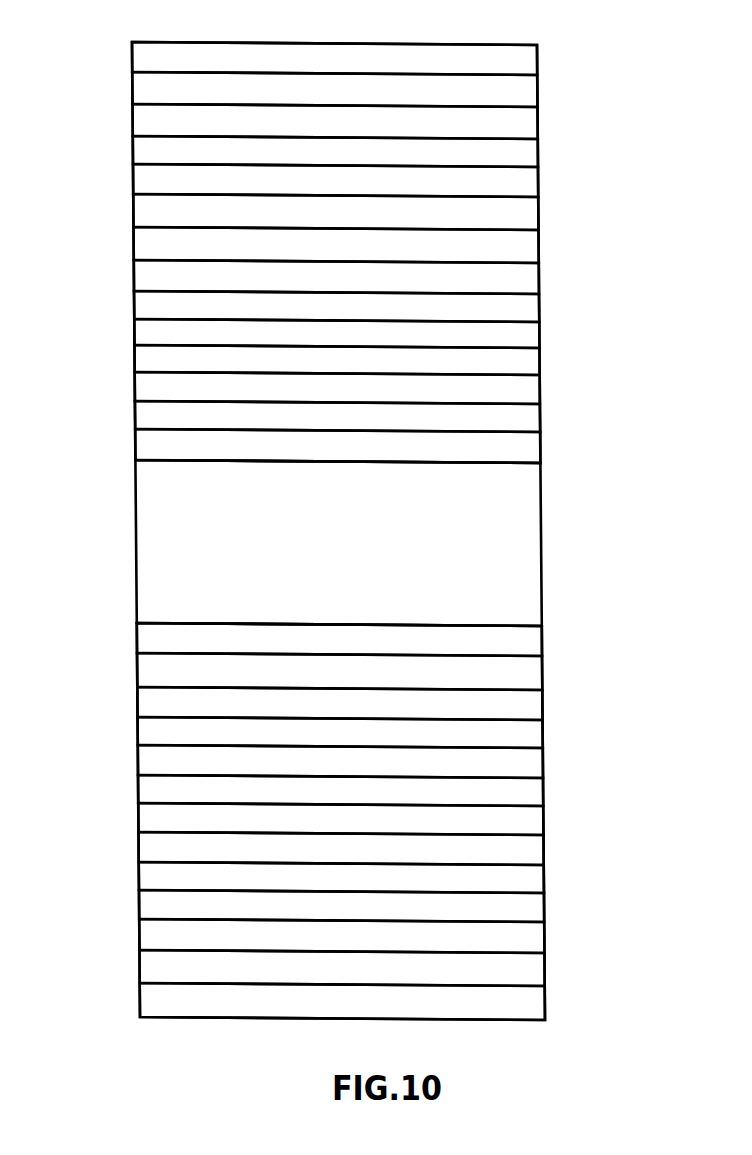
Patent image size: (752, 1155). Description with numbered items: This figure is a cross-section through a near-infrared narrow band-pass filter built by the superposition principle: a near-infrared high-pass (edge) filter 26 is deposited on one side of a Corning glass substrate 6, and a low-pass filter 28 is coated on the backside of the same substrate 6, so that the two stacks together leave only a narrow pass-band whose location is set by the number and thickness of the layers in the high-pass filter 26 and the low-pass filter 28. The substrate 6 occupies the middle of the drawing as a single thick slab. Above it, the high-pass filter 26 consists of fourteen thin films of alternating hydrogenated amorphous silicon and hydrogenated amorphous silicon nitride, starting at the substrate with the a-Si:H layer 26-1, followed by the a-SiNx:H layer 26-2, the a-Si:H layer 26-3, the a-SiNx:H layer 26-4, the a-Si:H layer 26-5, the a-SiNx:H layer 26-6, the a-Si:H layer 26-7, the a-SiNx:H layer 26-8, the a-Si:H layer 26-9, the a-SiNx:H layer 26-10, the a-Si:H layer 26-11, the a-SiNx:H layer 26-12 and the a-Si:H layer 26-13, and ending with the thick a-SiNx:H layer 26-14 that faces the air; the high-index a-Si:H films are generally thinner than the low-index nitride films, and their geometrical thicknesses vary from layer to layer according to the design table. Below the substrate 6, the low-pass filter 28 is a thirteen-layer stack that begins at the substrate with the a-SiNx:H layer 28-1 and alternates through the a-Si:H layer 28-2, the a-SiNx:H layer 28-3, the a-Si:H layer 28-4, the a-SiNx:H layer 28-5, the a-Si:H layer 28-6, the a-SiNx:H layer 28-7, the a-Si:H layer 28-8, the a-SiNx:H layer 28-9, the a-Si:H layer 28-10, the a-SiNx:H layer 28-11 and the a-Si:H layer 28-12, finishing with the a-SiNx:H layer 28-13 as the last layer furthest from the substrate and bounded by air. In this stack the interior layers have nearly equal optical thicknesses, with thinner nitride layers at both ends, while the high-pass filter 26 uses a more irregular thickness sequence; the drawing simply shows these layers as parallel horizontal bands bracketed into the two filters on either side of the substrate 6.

The glass substrate 6 is at (338, 543).
The near-infrared high-pass filter 26 is at (113, 486).
The low-pass filter 28 is at (113, 624).
The a-Si:H layer 26-1 is at (533, 446).
The a-SiNx:H layer 26-2 is at (533, 416).
The a-Si:H layer 26-3 is at (533, 388).
The a-SiNx:H layer 26-4 is at (533, 360).
The a-Si:H layer 26-5 is at (533, 333).
The a-SiNx:H layer 26-6 is at (533, 306).
The a-Si:H layer 26-7 is at (533, 276).
The a-SiNx:H layer 26-8 is at (533, 244).
The a-Si:H layer 26-9 is at (533, 212).
The a-SiNx:H layer 26-10 is at (533, 180).
The a-Si:H layer 26-11 is at (533, 151).
The a-SiNx:H layer 26-12 is at (533, 121).
The a-Si:H layer 26-13 is at (533, 89).
The a-SiNx:H layer 26-14 is at (533, 58).
The a-SiNx:H layer 28-1 is at (533, 639).
The a-Si:H layer 28-2 is at (533, 671).
The a-SiNx:H layer 28-3 is at (533, 703).
The a-Si:H layer 28-4 is at (533, 732).
The a-SiNx:H layer 28-5 is at (533, 761).
The a-Si:H layer 28-6 is at (533, 790).
The a-SiNx:H layer 28-7 is at (533, 818).
The a-Si:H layer 28-8 is at (533, 848).
The a-SiNx:H layer 28-9 is at (533, 877).
The a-Si:H layer 28-10 is at (533, 906).
The a-SiNx:H layer 28-11 is at (533, 936).
The a-Si:H layer 28-12 is at (533, 968).
The a-SiNx:H layer 28-13 is at (533, 1001).